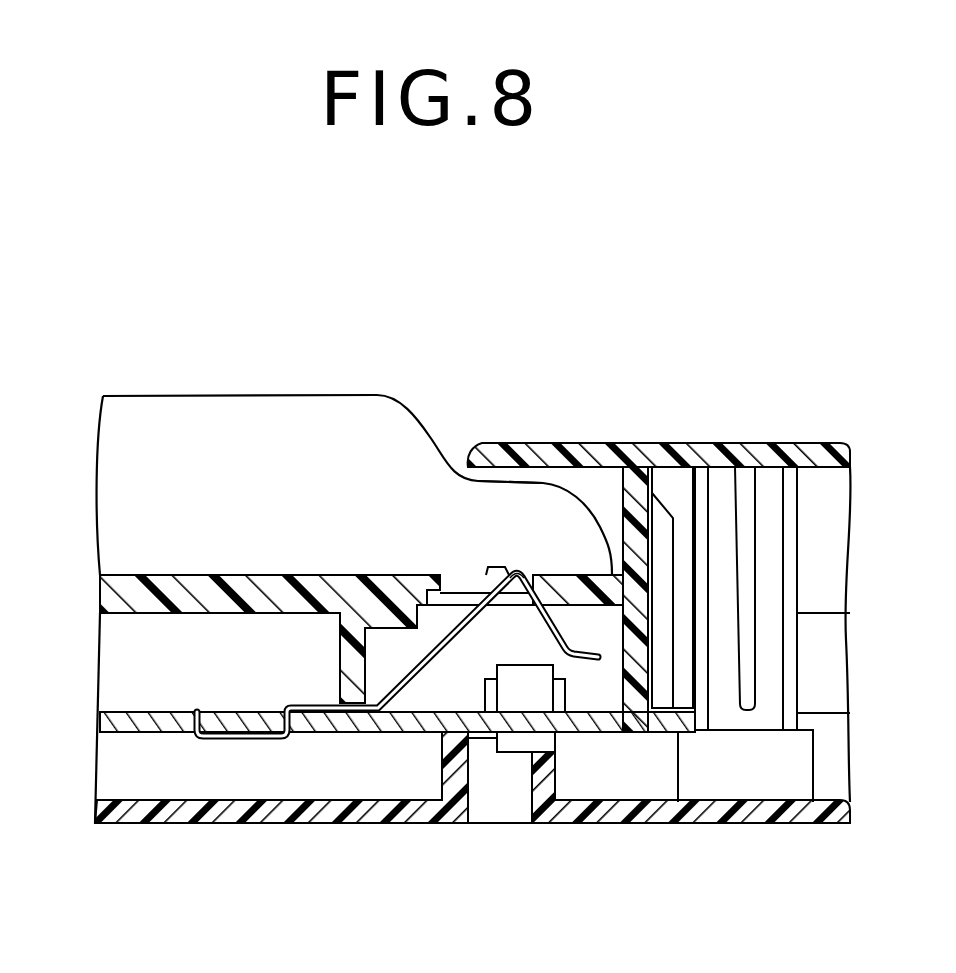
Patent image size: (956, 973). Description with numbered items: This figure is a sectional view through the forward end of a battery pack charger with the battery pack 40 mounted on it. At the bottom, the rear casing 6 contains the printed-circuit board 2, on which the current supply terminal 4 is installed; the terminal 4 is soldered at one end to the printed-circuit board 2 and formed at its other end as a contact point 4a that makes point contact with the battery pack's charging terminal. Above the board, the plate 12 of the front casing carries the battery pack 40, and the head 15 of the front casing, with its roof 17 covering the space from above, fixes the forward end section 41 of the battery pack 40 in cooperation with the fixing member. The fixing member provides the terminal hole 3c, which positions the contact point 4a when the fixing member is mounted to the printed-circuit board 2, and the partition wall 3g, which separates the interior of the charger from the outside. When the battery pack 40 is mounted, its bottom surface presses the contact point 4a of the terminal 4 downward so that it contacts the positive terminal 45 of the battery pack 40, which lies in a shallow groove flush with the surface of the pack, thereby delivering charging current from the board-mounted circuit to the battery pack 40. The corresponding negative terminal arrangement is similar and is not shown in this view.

The battery pack 40 is at (213, 407).
The forward end section 41 is at (513, 483).
The roof 17 is at (552, 445).
The partition wall 3g is at (657, 470).
The head 15 is at (760, 445).
The plate 12 is at (200, 575).
The terminal hole 3c is at (450, 572).
The positive terminal 45 is at (497, 567).
The contact point 4a is at (521, 570).
The current supply terminal 4 is at (425, 672).
The printed-circuit board 2 is at (592, 735).
The rear casing 6 is at (665, 815).